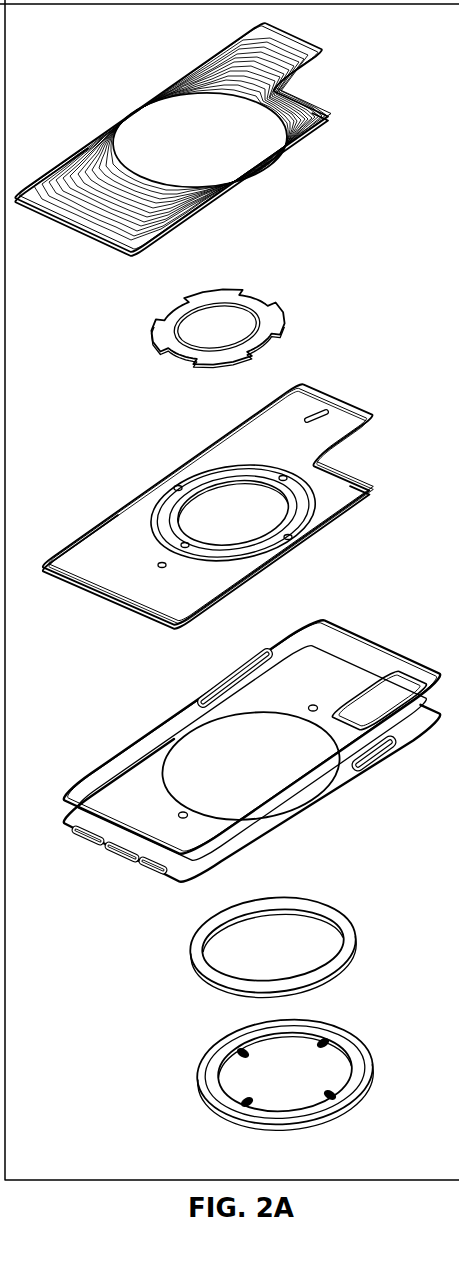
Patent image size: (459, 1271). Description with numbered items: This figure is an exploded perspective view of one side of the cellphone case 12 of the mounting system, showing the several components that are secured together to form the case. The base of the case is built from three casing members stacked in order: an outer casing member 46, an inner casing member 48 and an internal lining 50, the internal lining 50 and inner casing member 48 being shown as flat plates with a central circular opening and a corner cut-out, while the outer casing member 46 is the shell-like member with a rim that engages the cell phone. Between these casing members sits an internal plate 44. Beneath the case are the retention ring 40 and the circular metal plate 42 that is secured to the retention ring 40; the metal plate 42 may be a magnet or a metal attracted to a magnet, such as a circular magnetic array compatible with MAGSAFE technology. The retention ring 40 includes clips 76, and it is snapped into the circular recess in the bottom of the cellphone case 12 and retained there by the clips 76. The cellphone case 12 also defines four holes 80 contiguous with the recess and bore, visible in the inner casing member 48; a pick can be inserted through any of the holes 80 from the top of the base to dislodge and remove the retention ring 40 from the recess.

The cellphone case 12 is at (77, 61).
The internal lining 50 is at (105, 240).
The internal plate 44 is at (254, 303).
The inner casing member 48 is at (330, 520).
The holes 80 is at (284, 476).
The outer casing member 46 is at (302, 793).
The metal plate 42 is at (343, 925).
The retention ring 40 is at (355, 1047).
The clips 76 is at (242, 1050).